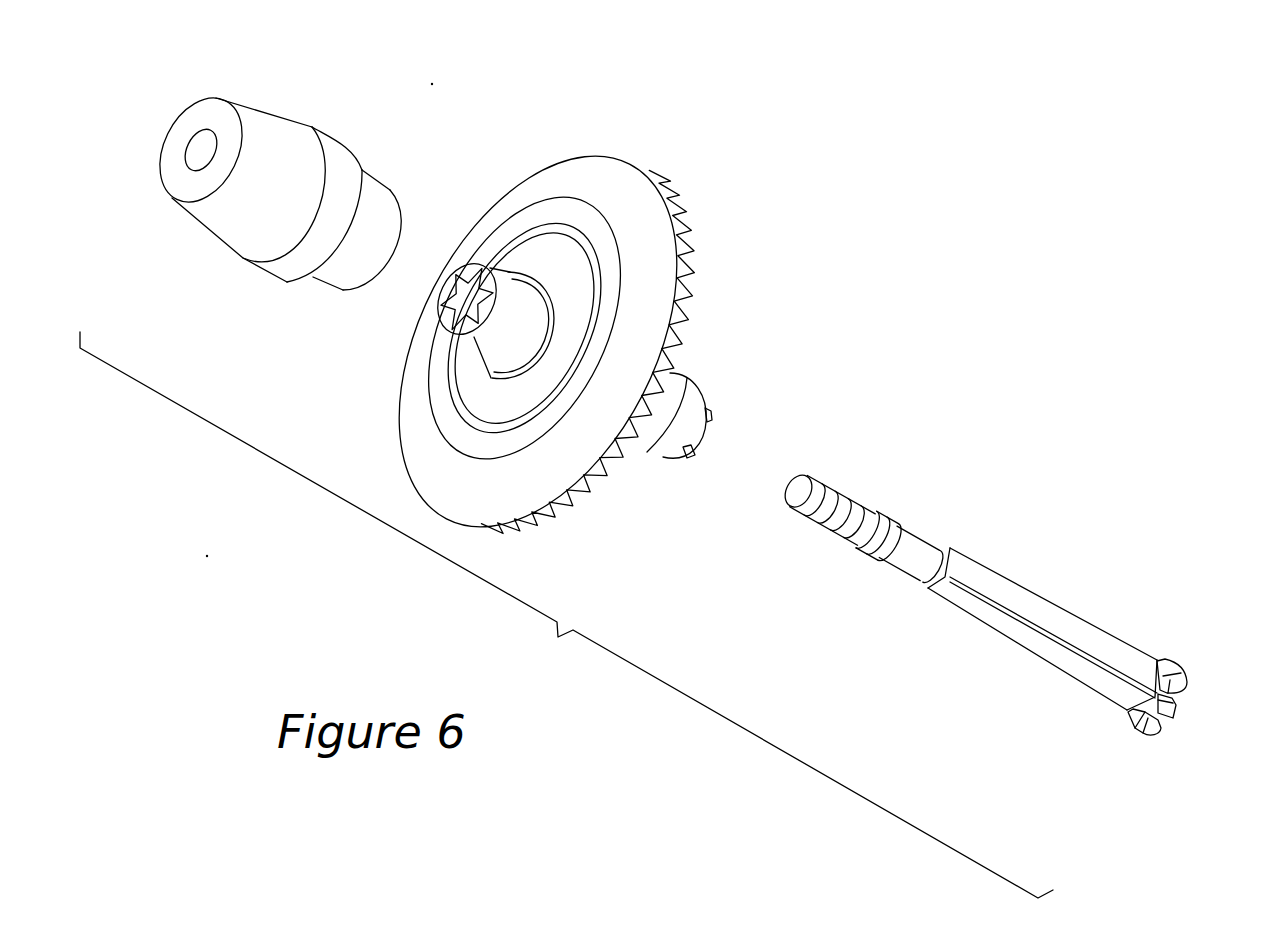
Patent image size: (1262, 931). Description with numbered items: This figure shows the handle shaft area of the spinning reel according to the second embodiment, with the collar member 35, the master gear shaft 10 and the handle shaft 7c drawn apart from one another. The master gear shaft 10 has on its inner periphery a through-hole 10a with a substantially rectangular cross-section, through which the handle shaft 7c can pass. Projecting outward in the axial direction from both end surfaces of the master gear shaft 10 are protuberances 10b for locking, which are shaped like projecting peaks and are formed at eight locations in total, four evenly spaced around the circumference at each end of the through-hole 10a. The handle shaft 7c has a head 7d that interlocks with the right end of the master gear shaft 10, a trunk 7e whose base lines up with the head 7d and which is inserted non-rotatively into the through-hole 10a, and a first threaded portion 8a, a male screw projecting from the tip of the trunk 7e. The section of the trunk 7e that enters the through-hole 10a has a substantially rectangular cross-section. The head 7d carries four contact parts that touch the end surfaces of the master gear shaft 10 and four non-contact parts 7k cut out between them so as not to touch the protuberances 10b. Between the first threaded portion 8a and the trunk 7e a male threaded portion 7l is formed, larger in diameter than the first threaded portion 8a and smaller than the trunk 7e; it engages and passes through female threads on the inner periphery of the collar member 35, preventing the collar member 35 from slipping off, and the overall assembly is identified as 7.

The collar member 35 is at (297, 120).
The master gear shaft 10 is at (611, 150).
The through-hole 10a is at (446, 290).
The protuberances 10b is at (448, 310).
The screw head 7 is at (1178, 712).
The handle shaft 7c is at (1040, 581).
The head 7d is at (1180, 670).
The trunk 7e is at (1087, 636).
The non-contact parts 7k is at (1163, 728).
The male threaded portion 7l is at (880, 520).
The first threaded portion 8a is at (832, 522).